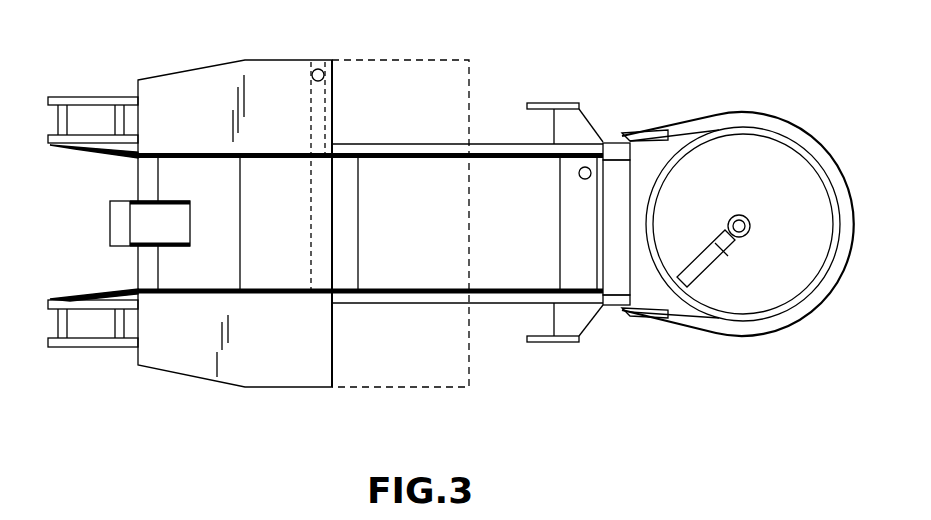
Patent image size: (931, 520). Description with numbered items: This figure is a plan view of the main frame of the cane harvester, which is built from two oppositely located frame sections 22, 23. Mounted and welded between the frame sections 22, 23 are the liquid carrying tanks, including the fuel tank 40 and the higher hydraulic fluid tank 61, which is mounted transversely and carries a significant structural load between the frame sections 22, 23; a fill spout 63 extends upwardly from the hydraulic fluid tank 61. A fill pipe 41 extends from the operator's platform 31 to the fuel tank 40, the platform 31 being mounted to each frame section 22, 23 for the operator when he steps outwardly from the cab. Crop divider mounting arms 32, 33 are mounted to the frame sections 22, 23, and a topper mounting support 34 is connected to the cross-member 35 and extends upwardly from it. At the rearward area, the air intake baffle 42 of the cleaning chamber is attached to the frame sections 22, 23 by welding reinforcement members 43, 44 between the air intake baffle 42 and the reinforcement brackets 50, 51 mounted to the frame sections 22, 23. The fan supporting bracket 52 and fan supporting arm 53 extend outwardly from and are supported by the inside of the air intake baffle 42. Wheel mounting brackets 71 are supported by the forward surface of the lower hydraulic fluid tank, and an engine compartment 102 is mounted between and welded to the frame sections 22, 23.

The frame section 22 is at (521, 302).
The frame section 23 is at (503, 152).
The platform 31 is at (204, 66).
The crop divider mounting arm 32 is at (67, 347).
The crop divider mounting arm 33 is at (83, 97).
The topper mounting support 34 is at (172, 247).
The cross-member 35 is at (160, 172).
The fuel tank 40 is at (284, 233).
The fill pipe 41 is at (318, 68).
The air intake baffle 42 is at (760, 113).
The reinforcement member 43 is at (643, 318).
The reinforcement member 44 is at (638, 130).
The reinforcement bracket 50 is at (600, 308).
The reinforcement bracket 51 is at (608, 143).
The fan supporting bracket 52 is at (741, 215).
The fan supporting arm 53 is at (706, 273).
The hydraulic fluid tank 61 is at (593, 235).
The fill spout 63 is at (578, 182).
The wheel mounting bracket 71 is at (557, 103).
The engine compartment 102 is at (411, 60).